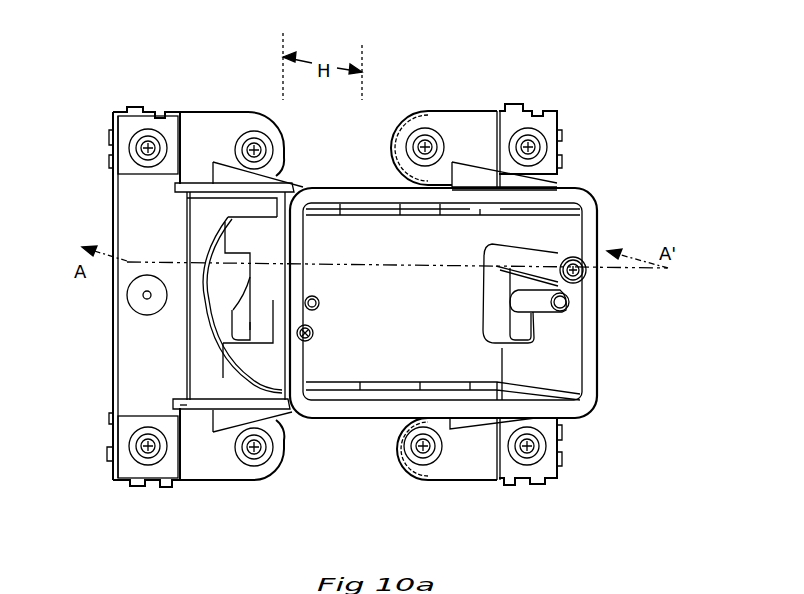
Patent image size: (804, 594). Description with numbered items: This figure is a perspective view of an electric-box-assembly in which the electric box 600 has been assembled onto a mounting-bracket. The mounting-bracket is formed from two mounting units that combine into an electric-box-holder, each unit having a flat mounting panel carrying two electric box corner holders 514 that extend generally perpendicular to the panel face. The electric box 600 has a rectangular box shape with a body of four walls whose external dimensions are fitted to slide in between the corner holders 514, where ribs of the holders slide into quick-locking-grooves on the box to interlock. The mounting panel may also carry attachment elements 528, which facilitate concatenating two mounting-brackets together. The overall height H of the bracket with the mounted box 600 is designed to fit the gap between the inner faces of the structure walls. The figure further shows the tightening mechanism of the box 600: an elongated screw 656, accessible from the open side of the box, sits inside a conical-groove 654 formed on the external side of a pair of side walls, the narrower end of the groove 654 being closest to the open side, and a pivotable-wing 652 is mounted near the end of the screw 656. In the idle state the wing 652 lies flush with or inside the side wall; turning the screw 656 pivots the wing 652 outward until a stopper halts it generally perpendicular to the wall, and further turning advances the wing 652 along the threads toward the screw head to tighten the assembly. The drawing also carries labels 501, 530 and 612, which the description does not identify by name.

The mounting bracket 501 is at (193, 100).
The screw 530 is at (257, 98).
The attachment elements 528 is at (134, 100).
The pivotable-wing 652 is at (237, 307).
The conical-groove 654 is at (560, 235).
The elongated screw 656 is at (580, 276).
The housing frame 612 is at (588, 353).
The electric box 600 is at (589, 415).
The electric box corner holders 514 is at (198, 405).